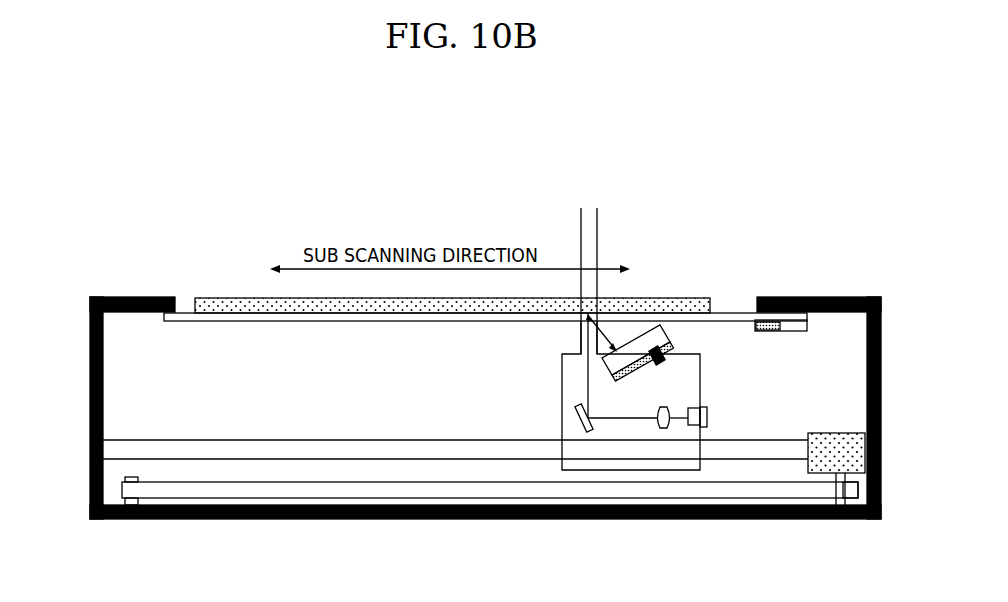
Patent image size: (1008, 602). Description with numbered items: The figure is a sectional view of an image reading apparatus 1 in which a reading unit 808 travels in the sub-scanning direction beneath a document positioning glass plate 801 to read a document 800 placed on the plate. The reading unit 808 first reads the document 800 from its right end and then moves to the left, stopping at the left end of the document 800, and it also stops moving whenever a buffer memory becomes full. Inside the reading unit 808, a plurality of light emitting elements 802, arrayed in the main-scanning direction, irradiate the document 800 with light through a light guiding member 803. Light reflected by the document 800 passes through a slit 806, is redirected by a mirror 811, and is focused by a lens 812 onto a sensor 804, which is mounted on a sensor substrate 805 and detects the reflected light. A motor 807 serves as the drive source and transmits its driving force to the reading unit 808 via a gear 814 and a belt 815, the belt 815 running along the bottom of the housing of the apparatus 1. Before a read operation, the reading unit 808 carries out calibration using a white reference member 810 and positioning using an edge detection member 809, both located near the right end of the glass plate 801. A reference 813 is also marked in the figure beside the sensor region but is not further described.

The image reading apparatus 1 is at (89, 339).
The document 800 is at (195, 298).
The document positioning glass plate 801 is at (187, 320).
The light emitting elements 802 is at (652, 346).
The light guiding member 803 is at (622, 345).
The sensor 804 is at (700, 408).
The sensor substrate 805 is at (707, 420).
The slit 806 is at (577, 353).
The motor 807 is at (840, 433).
The reading unit 808 is at (562, 355).
The edge detection member 809 is at (768, 331).
The white reference member 810 is at (807, 326).
The mirror 811 is at (577, 412).
The lens 812 is at (663, 406).
The reading unit 813 is at (801, 382).
The gear 814 is at (845, 503).
The belt 815 is at (728, 498).